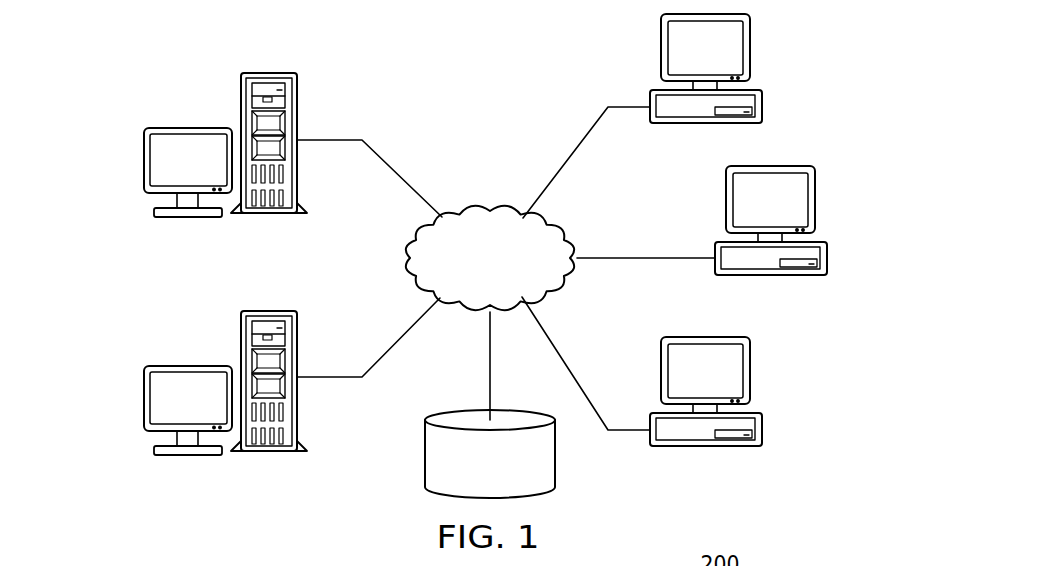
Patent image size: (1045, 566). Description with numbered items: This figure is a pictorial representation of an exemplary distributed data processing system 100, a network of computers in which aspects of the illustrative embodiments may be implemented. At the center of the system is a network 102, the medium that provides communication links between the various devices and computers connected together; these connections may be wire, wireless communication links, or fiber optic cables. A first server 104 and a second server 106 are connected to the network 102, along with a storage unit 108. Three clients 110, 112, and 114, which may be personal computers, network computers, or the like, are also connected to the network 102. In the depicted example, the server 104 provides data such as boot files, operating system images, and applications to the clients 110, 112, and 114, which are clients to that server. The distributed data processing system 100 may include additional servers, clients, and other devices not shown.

The distributed data processing system 100 is at (363, 70).
The network 102 is at (466, 208).
The server 104 is at (143, 160).
The server 106 is at (143, 398).
The storage unit 108 is at (425, 450).
The client 110 is at (762, 98).
The client 112 is at (825, 265).
The client 114 is at (762, 438).